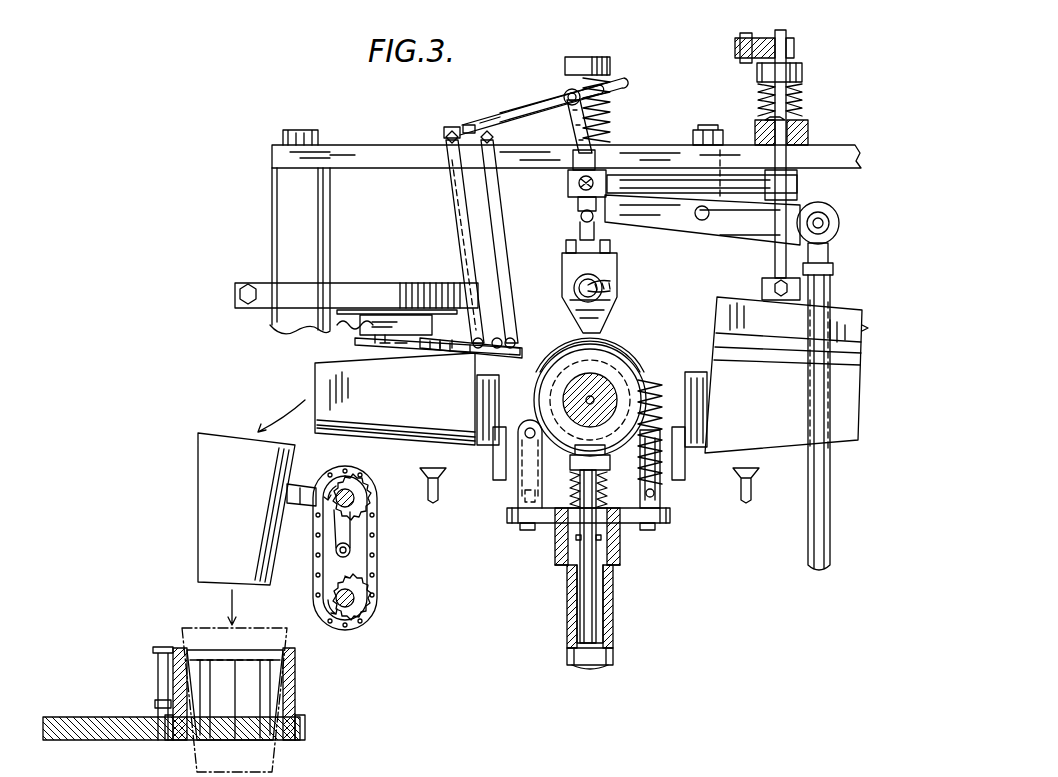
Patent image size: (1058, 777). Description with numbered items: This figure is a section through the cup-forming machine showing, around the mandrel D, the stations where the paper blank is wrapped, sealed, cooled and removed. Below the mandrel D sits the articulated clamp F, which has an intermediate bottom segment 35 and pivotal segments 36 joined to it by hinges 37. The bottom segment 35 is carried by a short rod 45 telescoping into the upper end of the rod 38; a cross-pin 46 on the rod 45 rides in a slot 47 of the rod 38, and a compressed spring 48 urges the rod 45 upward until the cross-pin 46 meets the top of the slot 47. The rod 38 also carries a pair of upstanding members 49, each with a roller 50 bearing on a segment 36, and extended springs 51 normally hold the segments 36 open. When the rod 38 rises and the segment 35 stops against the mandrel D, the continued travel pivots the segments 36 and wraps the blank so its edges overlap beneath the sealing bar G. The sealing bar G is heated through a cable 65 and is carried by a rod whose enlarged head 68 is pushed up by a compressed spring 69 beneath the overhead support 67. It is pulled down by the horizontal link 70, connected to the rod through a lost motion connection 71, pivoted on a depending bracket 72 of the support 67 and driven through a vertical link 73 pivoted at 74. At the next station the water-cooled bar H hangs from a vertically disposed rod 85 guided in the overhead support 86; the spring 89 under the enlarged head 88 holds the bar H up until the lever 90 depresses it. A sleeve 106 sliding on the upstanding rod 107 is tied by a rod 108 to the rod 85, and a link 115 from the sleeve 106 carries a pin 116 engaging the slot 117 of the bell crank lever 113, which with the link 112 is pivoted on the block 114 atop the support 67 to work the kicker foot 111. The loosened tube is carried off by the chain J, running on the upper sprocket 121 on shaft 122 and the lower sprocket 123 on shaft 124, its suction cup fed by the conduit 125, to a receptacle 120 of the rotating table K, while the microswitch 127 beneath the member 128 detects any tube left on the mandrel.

The overhead support 67 is at (352, 152).
The member 128 is at (372, 292).
The microswitch 127 is at (366, 335).
The mandrel D is at (478, 446).
The pivotal link 112 is at (462, 232).
The pivotal bell crank lever 113 is at (498, 216).
The block 114 is at (455, 128).
The kicker foot 111 is at (448, 356).
The slot 117 is at (612, 92).
The pin 116 is at (565, 98).
The enlarged head 68 is at (588, 64).
The compressed spring 69 is at (608, 122).
The link 115 is at (572, 142).
The upstanding vertical rod 107 is at (596, 160).
The sleeve 106 is at (568, 183).
The lost motion slot and pin connection 71 is at (575, 214).
The depending bracket 72 is at (688, 180).
The rod 108 is at (722, 192).
The link 70 is at (656, 230).
The pivotal connection 74 is at (822, 221).
The vertically disposed link 73 is at (808, 542).
The vertically disposed rod 85 is at (792, 116).
The horizontally disposed lever 90 is at (742, 57).
The enlarged head 88 is at (803, 74).
The compressed spring 89 is at (800, 97).
The overhead support 86 is at (808, 137).
The water-cooled bar H is at (729, 302).
The sealing bar G is at (612, 274).
The cable 65 is at (612, 292).
The articulated clamp F is at (625, 354).
The pivotal segments 36 is at (576, 352).
The roller 50 is at (522, 428).
The upstanding members 49 is at (520, 488).
The extended springs 51 is at (652, 394).
The compressed spring 48 is at (545, 526).
The slot 47 is at (600, 542).
The short rod 45 is at (583, 602).
The cross-pin 46 is at (570, 567).
The rod 38 is at (614, 659).
The intermediate bottom segment 35 is at (575, 464).
The hinges 37 is at (626, 460).
The chain J is at (378, 548).
The upper sprocket 121 is at (368, 502).
The shaft 122 is at (346, 490).
The conduit 125 is at (337, 550).
The shaft 124 is at (362, 592).
The lower sprocket 123 is at (366, 610).
The rotating table K is at (78, 720).
The receptacle 120 is at (294, 702).